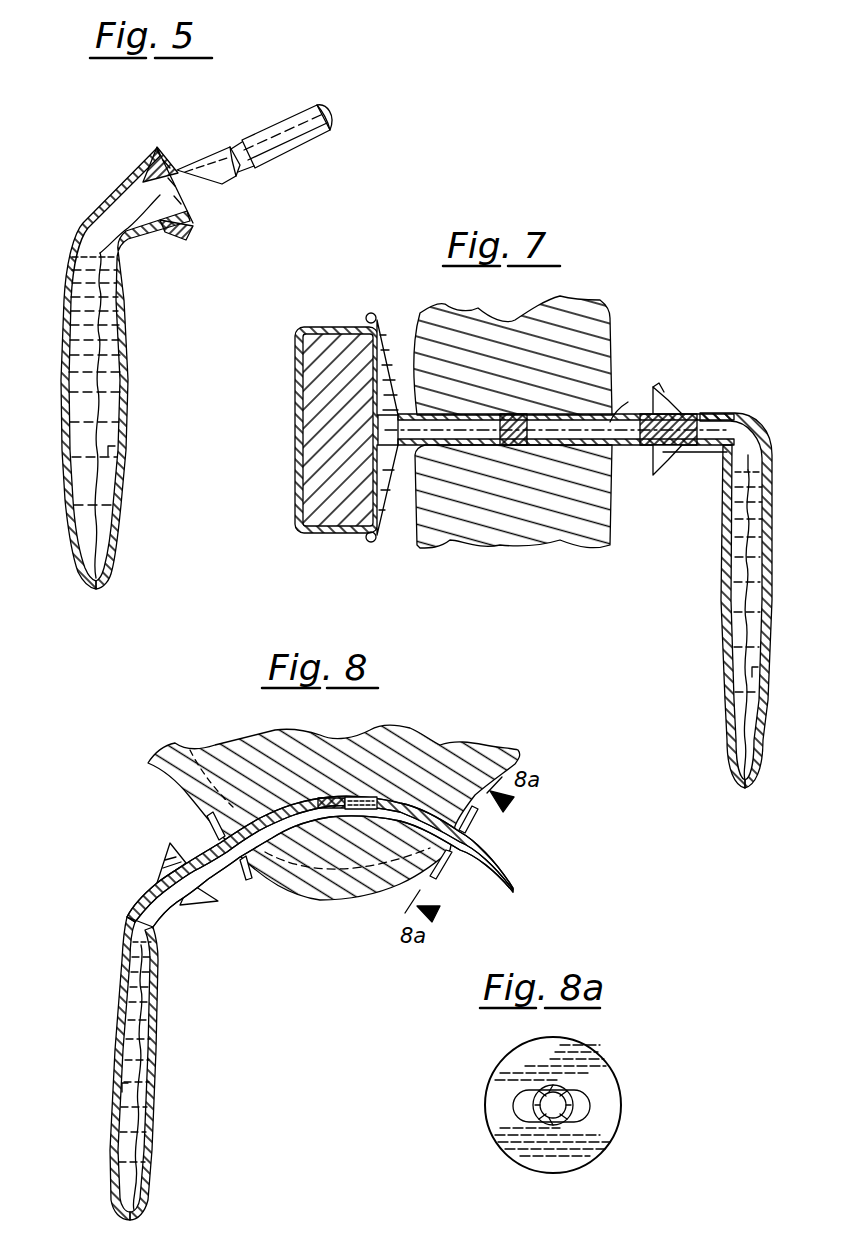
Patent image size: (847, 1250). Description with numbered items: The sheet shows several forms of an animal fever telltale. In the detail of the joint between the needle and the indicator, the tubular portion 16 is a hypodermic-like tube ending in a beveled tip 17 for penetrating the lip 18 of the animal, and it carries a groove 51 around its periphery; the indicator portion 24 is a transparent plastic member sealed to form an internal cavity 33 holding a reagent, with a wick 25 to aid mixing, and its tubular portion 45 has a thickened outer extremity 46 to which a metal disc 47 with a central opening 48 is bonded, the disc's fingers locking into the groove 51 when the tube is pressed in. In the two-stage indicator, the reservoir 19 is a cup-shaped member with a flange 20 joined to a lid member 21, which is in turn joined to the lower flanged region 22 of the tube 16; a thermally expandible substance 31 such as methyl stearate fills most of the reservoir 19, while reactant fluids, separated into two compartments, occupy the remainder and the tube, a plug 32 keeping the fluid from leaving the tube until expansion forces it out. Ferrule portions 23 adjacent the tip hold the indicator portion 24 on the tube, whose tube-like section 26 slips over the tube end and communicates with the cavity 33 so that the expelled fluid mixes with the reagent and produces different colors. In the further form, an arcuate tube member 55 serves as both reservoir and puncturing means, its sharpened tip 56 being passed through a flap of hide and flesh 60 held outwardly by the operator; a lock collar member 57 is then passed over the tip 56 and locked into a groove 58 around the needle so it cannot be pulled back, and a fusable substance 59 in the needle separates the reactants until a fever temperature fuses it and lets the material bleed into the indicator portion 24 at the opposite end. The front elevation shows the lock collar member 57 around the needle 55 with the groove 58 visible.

In FIG. 5, the tubular portion 16 is at (282, 125).
In FIG. 7, the tubular portion 16 is at (633, 447).
In FIG. 5, the beveled tip 17 is at (185, 165).
In FIG. 7, the lip 18 is at (612, 518).
In FIG. 7, the reservoir 19 is at (307, 430).
In FIG. 7, the flange 20 is at (371, 313).
In FIG. 7, the lid member 21 is at (382, 320).
In FIG. 7, the lower flanged region 22 is at (396, 542).
In FIG. 7, the ferrule portions 23 is at (668, 458).
In FIG. 5, the indicator portion 24 is at (61, 337).
In FIG. 7, the indicator portion 24 is at (720, 580).
In FIG. 8, the indicator portion 24 is at (108, 1140).
In FIG. 5, the wick 25 is at (100, 408).
In FIG. 7, the wick 25 is at (760, 627).
In FIG. 8, the wick 25 is at (130, 1140).
In FIG. 7, the tube-like section 26 is at (660, 387).
In FIG. 7, the thermally expandible substance 31 is at (354, 432).
In FIG. 7, the plug 32 is at (712, 411).
In FIG. 5, the internal cavity 33 is at (112, 450).
In FIG. 7, the internal cavity 33 is at (755, 675).
In FIG. 8, the internal cavity 33 is at (122, 1087).
In FIG. 5, the tubular portion 45 is at (133, 360).
In FIG. 5, the thickened outer extremity 46 is at (155, 152).
In FIG. 5, the metal disc 47 is at (192, 228).
In FIG. 7, the opening 48 is at (512, 414).
In FIG. 5, the groove 51 is at (247, 168).
In FIG. 8, the arcuate tube member 55 is at (372, 800).
In FIG. 8a, the arcuate tube member 55 is at (513, 1105).
In FIG. 8, the sharpened tip 56 is at (505, 885).
In FIG. 8a, the lock collar member 57 is at (618, 1078).
In FIG. 8, the groove 58 is at (466, 832).
In FIG. 8a, the groove 58 is at (548, 1125).
In FIG. 8, the fusable substance 59 is at (330, 800).
In FIG. 8, the flap of hide and flesh 60 is at (358, 781).